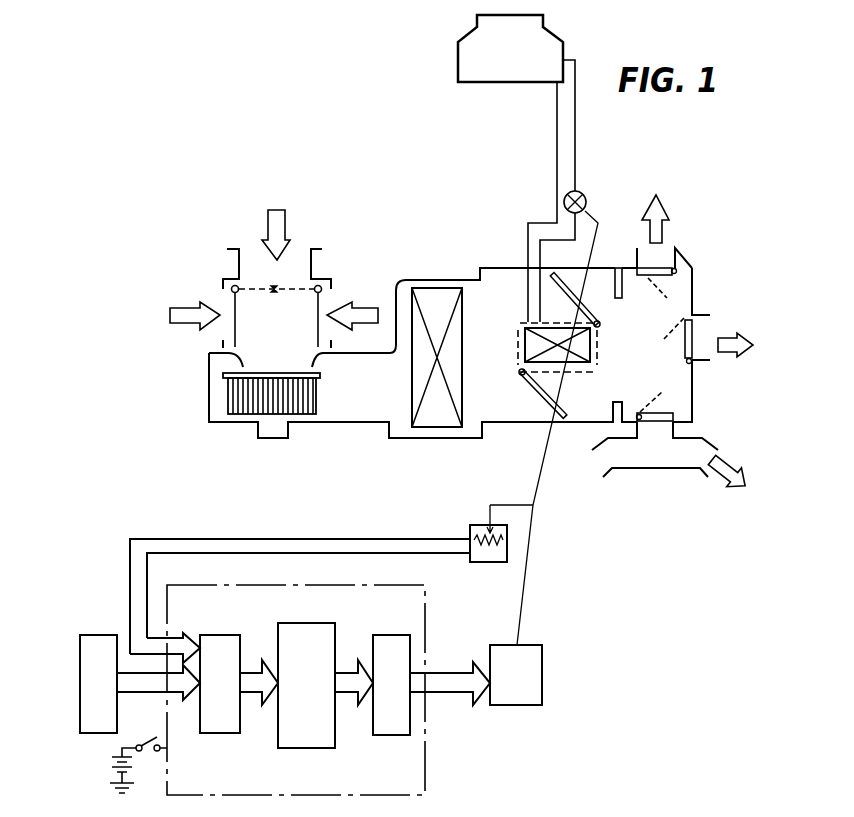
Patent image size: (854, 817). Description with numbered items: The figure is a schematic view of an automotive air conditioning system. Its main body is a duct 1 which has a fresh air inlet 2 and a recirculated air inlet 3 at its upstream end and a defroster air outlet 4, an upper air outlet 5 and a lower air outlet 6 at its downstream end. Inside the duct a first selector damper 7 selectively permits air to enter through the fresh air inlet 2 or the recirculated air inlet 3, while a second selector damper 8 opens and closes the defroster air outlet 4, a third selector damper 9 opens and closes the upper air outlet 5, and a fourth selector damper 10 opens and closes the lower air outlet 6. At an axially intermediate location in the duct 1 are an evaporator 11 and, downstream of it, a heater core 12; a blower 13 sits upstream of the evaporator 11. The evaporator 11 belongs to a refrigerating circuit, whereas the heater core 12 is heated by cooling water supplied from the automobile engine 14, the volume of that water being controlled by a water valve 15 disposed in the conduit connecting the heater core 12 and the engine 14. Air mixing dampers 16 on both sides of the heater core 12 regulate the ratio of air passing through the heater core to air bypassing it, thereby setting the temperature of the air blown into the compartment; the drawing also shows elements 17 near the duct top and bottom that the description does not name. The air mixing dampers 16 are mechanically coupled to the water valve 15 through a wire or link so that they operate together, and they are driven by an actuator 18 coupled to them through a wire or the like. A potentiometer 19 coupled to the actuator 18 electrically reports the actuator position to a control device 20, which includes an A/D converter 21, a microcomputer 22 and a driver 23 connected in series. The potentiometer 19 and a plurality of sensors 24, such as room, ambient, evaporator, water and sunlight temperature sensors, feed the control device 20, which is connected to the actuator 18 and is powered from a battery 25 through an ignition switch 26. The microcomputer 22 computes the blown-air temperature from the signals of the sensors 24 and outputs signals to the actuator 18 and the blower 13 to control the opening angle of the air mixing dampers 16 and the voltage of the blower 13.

The duct 1 is at (372, 425).
The fresh air inlet 2 is at (257, 252).
The recirculated air inlet 3 is at (327, 300).
The defroster air outlet 4 is at (668, 252).
The upper air outlet 5 is at (705, 330).
The lower air outlet 6 is at (604, 458).
The first selector damper 7 is at (317, 306).
The second selector damper 8 is at (683, 279).
The third selector damper 9 is at (692, 372).
The fourth selector damper 10 is at (676, 416).
The evaporator 11 is at (437, 428).
The heater core 12 is at (522, 323).
The blower 13 is at (265, 440).
The automobile engine 14 is at (545, 22).
The water valve 15 is at (584, 191).
The air mixing dampers 16 is at (577, 282).
The temperature sensors 17 is at (605, 290).
The actuator 18 is at (542, 648).
The potentiometer 19 is at (472, 527).
The control device 20 is at (427, 765).
The A/D converter 21 is at (225, 735).
The microcomputer 22 is at (326, 748).
The driver 23 is at (390, 735).
The sensors 24 is at (85, 735).
The battery 25 is at (110, 770).
The ignition switch 26 is at (148, 752).